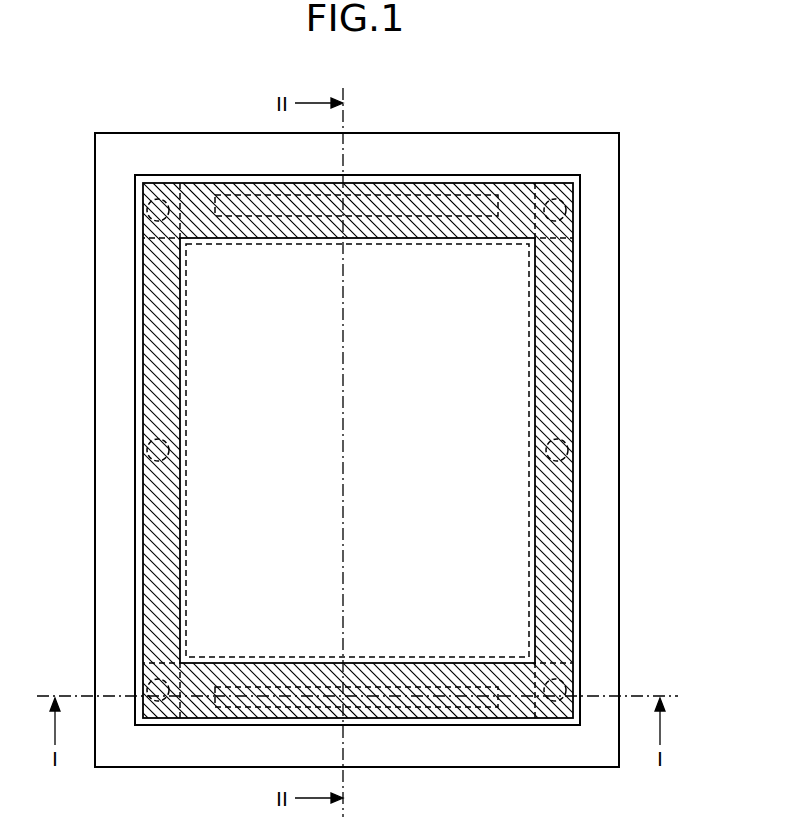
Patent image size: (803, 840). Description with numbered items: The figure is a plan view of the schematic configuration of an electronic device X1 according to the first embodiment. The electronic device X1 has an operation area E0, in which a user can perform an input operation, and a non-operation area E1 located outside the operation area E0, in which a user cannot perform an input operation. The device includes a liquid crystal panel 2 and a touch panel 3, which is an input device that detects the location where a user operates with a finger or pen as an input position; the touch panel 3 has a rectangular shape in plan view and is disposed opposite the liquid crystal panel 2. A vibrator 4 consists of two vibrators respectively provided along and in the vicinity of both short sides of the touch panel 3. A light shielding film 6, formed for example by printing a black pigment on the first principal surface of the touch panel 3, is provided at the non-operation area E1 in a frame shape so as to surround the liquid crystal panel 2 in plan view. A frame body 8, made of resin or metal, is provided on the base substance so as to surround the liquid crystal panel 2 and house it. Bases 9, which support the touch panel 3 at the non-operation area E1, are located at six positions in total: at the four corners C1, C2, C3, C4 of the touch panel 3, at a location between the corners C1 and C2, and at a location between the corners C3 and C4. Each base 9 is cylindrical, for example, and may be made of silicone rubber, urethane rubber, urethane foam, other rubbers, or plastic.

The electronic device X1 is at (614, 94).
The liquid crystal panel 2 is at (510, 578).
The touch panel 3 is at (555, 245).
The vibrator 4 is at (410, 190).
The light shielding film 6 is at (560, 297).
The frame body 8 is at (600, 350).
The base 9 is at (148, 206).
The operation area E0 is at (510, 395).
The non-operation area E1 is at (560, 512).
The corner C1 is at (158, 195).
The corner C2 is at (165, 720).
The corner C3 is at (553, 195).
The corner C4 is at (555, 720).